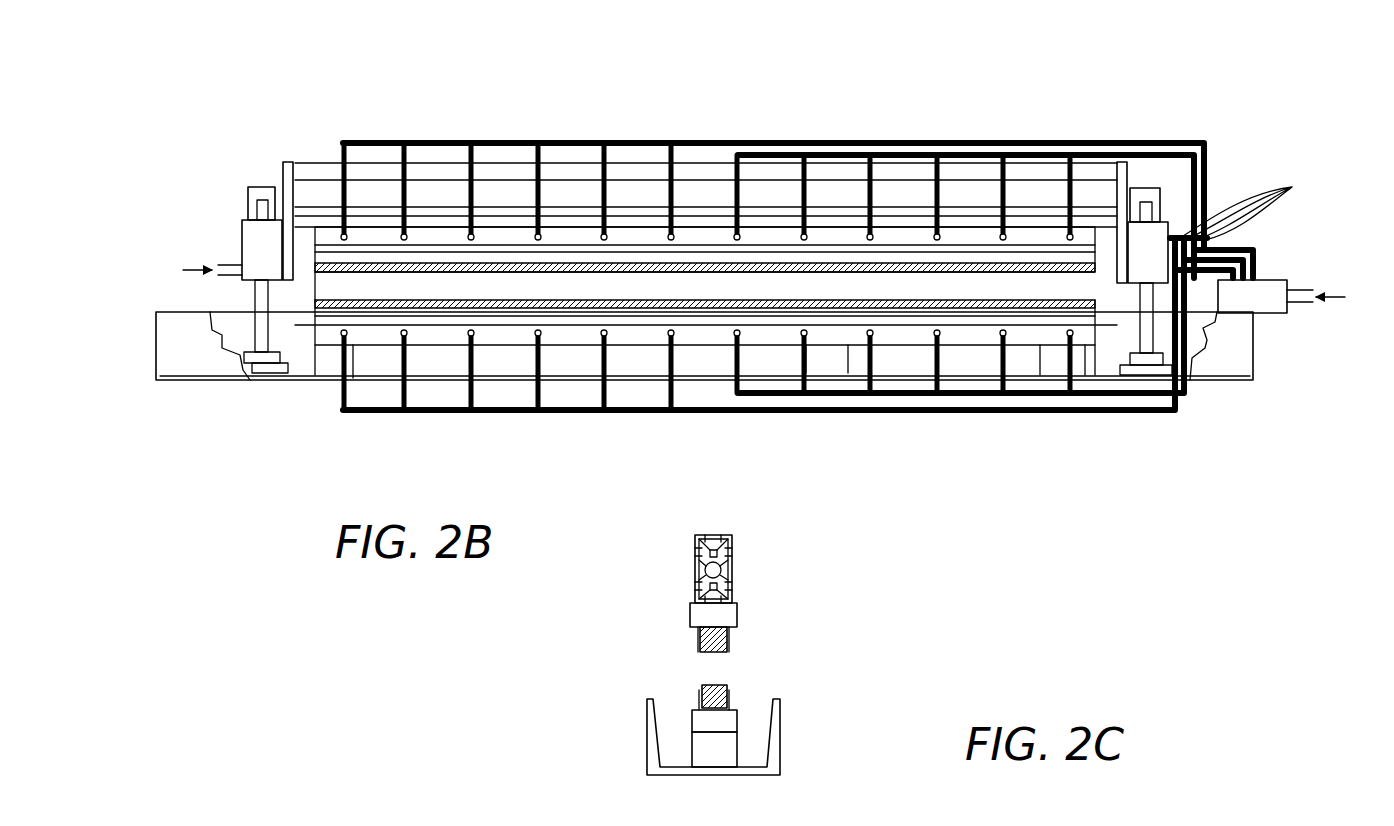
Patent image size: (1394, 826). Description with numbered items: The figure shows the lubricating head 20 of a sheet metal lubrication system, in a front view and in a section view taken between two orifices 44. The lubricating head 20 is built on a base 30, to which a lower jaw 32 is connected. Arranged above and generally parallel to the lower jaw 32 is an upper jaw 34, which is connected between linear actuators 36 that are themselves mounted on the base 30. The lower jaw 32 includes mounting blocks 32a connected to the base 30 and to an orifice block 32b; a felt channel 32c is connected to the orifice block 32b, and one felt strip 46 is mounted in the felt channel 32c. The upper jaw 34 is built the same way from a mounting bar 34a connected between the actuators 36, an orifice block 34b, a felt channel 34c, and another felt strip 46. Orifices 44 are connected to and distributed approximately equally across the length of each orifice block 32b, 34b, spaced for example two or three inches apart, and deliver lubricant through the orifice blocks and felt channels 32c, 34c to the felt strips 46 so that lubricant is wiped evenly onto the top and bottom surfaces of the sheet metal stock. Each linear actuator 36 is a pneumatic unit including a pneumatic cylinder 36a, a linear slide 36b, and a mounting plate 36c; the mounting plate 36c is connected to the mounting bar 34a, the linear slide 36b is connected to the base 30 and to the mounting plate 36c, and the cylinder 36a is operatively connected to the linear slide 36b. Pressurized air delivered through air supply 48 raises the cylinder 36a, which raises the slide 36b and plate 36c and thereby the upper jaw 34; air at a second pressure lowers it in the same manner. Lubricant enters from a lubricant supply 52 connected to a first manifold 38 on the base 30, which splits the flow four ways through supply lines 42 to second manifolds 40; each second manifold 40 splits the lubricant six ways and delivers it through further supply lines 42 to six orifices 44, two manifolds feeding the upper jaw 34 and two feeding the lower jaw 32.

In FIG. 2B, the lubricating head 20 is at (790, 84).
In FIG. 2C, the lubricating head 20 is at (568, 618).
In FIG. 2B, the base 30 is at (1237, 381).
In FIG. 2C, the base 30 is at (783, 728).
In FIG. 2B, the lower jaw 32 is at (711, 386).
In FIG. 2C, the lower jaw 32 is at (724, 711).
In FIG. 2B, the mounting blocks 32a is at (1020, 392).
In FIG. 2C, the mounting blocks 32a is at (690, 747).
In FIG. 2B, the orifice block 32b is at (1060, 350).
In FIG. 2C, the orifice block 32b is at (691, 722).
In FIG. 2B, the felt channel 32c is at (337, 320).
In FIG. 2C, the felt channel 32c is at (732, 702).
In FIG. 2B, the upper jaw 34 is at (706, 177).
In FIG. 2C, the upper jaw 34 is at (735, 581).
In FIG. 2B, the mounting bar 34a is at (645, 162).
In FIG. 2C, the mounting bar 34a is at (733, 543).
In FIG. 2B, the orifice block 34b is at (307, 232).
In FIG. 2C, the orifice block 34b is at (690, 613).
In FIG. 2B, the felt channel 34c is at (567, 255).
In FIG. 2C, the felt channel 34c is at (733, 633).
In FIG. 2B, the linear actuators 36 is at (736, 230).
In FIG. 2B, the pneumatic cylinder 36a is at (257, 186).
In FIG. 2B, the linear slide 36b is at (241, 236).
In FIG. 2B, the mounting plate 36c is at (288, 161).
In FIG. 2B, the first manifold 38 is at (1287, 314).
In FIG. 2B, the second manifolds 40 is at (1248, 203).
In FIG. 2B, the supply lines 42 is at (888, 155).
In FIG. 2B, the orifices 44 is at (537, 228).
In FIG. 2B, the felt strips 46 is at (345, 290).
In FIG. 2C, the felt strips 46 is at (703, 683).
In FIG. 2B, the air supply 48 is at (193, 270).
In FIG. 2B, the lubricant supply 52 is at (1345, 297).